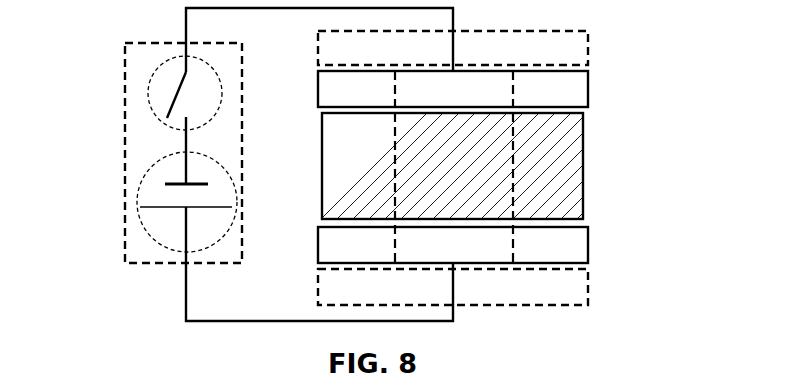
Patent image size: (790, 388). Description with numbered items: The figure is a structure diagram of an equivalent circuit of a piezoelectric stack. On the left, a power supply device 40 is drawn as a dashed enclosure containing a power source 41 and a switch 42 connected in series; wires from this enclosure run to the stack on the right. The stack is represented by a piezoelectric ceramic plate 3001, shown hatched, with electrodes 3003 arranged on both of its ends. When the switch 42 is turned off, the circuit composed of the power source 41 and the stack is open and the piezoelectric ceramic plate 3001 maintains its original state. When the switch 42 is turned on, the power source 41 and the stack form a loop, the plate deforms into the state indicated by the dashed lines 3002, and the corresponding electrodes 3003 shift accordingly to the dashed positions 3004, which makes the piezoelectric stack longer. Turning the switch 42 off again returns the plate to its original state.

The power supply device 40 is at (125, 153).
The power source 41 is at (140, 207).
The switch 42 is at (148, 93).
The piezoelectric ceramic plate 3001 is at (584, 165).
The deformed state of the piezoelectric ceramic plate 3002 is at (513, 139).
The electrode 3003 is at (590, 86).
The shifted electrode position 3004 is at (590, 46).